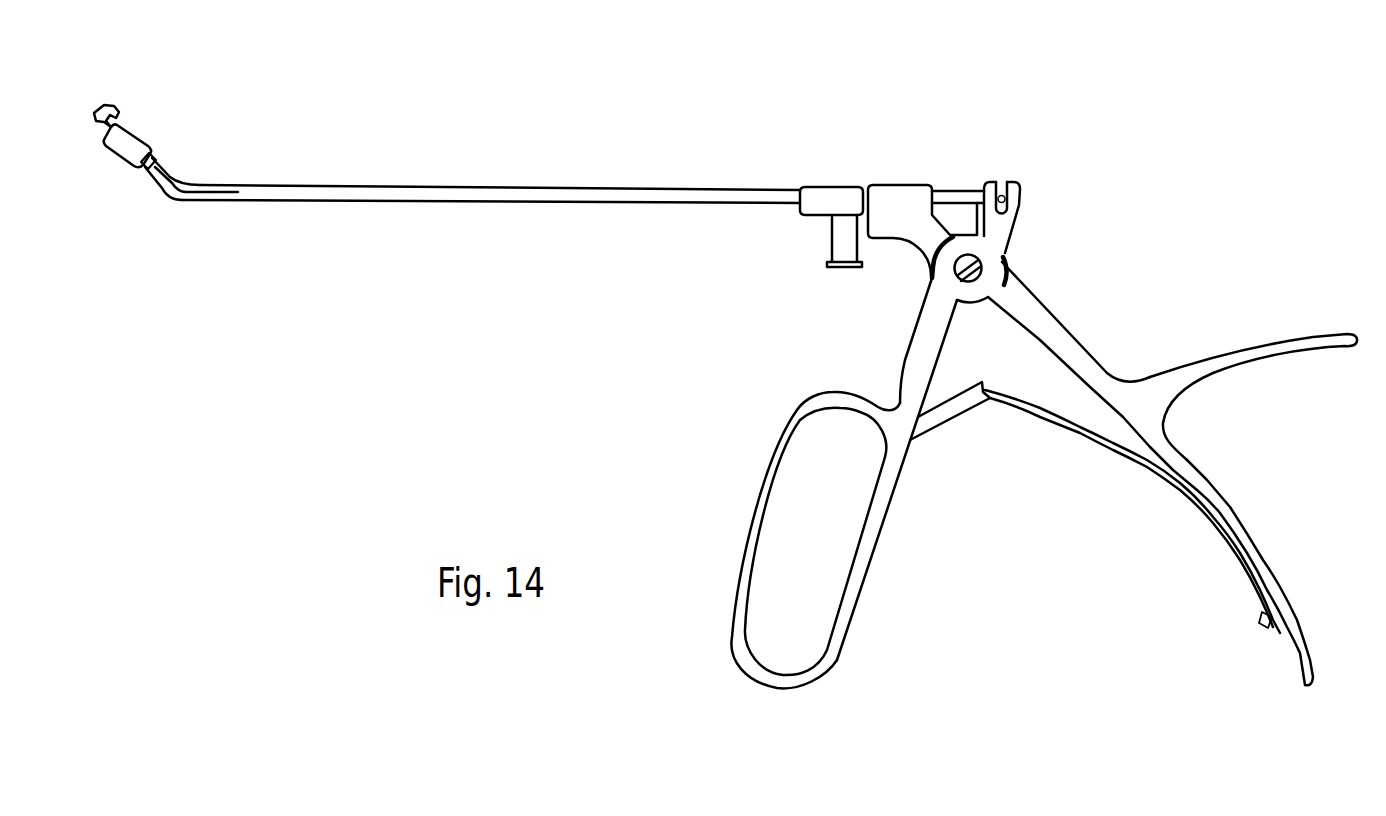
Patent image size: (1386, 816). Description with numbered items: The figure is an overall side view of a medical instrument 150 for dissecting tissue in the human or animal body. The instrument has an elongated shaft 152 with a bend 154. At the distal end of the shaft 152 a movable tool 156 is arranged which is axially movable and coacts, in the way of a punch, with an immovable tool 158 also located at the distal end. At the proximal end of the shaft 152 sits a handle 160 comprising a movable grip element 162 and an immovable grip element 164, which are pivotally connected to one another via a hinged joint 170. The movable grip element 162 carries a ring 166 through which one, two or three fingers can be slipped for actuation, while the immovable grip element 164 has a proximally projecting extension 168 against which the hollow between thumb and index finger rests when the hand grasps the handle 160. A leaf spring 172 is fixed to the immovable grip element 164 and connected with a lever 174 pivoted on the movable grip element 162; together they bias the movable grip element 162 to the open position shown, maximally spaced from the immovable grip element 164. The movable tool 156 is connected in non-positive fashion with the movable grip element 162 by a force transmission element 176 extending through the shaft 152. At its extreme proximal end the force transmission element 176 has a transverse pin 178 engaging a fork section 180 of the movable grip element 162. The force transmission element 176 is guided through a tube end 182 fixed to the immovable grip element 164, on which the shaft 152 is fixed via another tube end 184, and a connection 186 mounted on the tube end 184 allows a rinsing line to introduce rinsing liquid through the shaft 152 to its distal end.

The medical instrument 150 is at (522, 166).
The elongated shaft 152 is at (340, 203).
The bend 154 is at (186, 176).
The movable tool 156 is at (127, 162).
The immovable tool 158 is at (107, 132).
The handle 160 is at (1016, 504).
The movable grip element 162 is at (933, 348).
The immovable grip element 164 is at (1048, 335).
The ring 166 is at (757, 510).
The extension 168 is at (1252, 347).
The hinged joint 170 is at (953, 267).
The leaf spring 172 is at (1111, 443).
The lever 174 is at (942, 418).
The force transmission element 176 is at (954, 196).
The pin 178 is at (1001, 203).
The fork section 180 is at (1016, 200).
The tube end 182 is at (892, 196).
The tube end 184 is at (824, 197).
The connection 186 is at (842, 235).